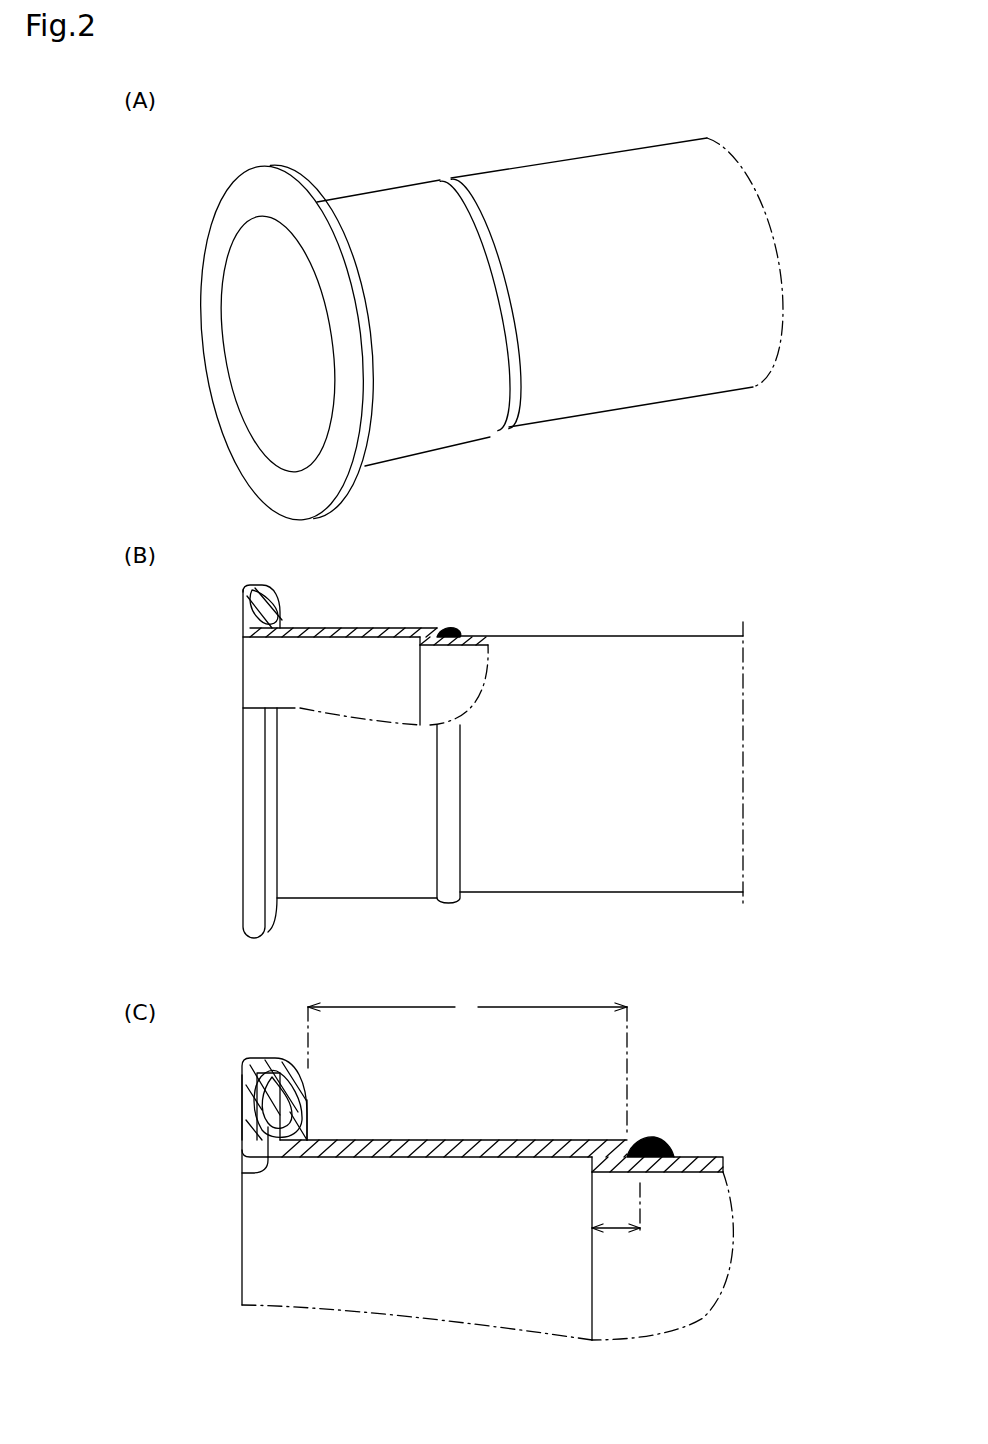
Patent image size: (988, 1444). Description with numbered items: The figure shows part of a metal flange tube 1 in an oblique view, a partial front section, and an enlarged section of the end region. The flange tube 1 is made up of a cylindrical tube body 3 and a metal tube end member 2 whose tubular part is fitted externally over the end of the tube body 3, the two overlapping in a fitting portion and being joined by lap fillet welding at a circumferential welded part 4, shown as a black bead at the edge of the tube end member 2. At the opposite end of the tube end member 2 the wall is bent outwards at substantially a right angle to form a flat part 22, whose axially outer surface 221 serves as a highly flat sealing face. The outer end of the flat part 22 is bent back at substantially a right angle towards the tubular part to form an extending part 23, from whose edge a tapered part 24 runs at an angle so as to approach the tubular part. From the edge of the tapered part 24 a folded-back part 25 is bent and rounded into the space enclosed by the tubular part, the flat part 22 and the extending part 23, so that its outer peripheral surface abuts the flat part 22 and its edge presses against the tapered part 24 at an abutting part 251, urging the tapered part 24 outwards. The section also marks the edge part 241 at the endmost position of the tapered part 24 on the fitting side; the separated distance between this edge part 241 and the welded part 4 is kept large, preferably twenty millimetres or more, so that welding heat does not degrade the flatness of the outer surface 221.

The flange tube 1 is at (470, 725).
The tube end member 2 is at (392, 734).
The tube body 3 is at (647, 407).
The welded part 4 is at (503, 413).
The flat part 22 is at (283, 717).
The extending part 23 is at (290, 182).
The tapered part 24 is at (273, 920).
The folded-back part 25 is at (268, 612).
The outer surface 221 is at (255, 450).
The edge part 241 is at (310, 1118).
The abutting part 251 is at (290, 1084).